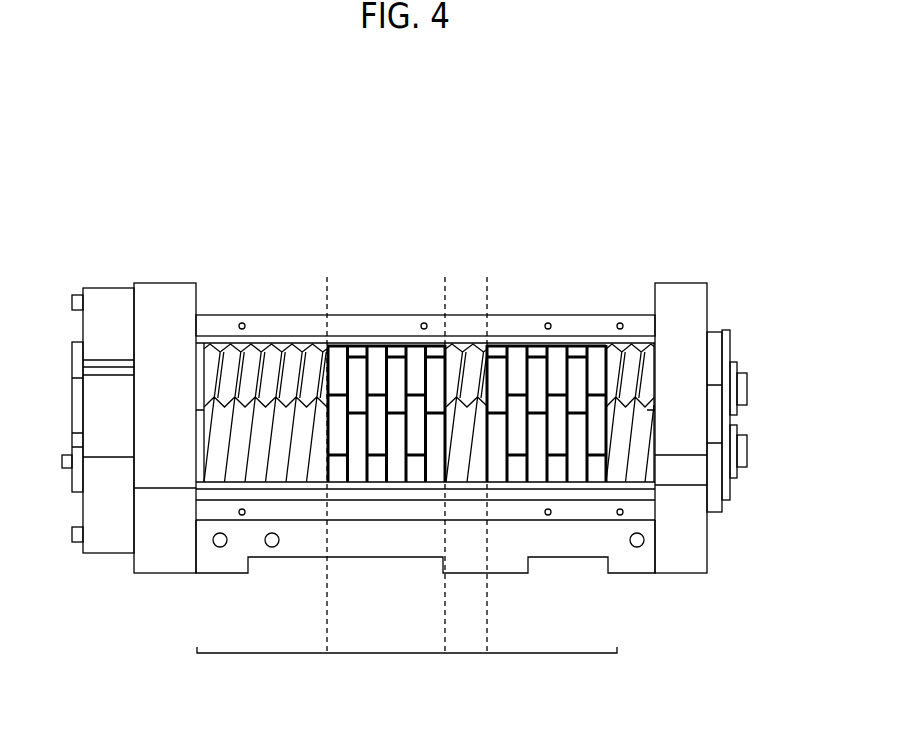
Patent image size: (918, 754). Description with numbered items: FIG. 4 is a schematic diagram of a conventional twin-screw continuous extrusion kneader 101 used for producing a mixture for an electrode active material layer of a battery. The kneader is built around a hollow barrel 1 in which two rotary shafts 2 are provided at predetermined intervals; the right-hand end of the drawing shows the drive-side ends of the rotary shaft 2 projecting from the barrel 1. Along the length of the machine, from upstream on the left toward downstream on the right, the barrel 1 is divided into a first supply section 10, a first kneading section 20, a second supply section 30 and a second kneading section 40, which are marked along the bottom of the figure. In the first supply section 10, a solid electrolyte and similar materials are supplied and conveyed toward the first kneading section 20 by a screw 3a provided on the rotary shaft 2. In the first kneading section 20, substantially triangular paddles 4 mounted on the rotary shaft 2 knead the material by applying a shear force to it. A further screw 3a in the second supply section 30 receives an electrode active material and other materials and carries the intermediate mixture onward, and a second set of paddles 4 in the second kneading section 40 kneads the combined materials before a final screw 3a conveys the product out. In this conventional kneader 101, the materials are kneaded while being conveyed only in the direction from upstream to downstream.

The conventional twin-screw continuous extrusion kneader 101 is at (93, 199).
The barrel 1 is at (164, 300).
The rotary shaft 2 is at (747, 388).
The screw 3a is at (257, 357).
The paddle 4 is at (375, 357).
The first supply section 10 is at (262, 653).
The first kneading section 20 is at (387, 653).
The second supply section 30 is at (467, 653).
The second kneading section 40 is at (552, 653).